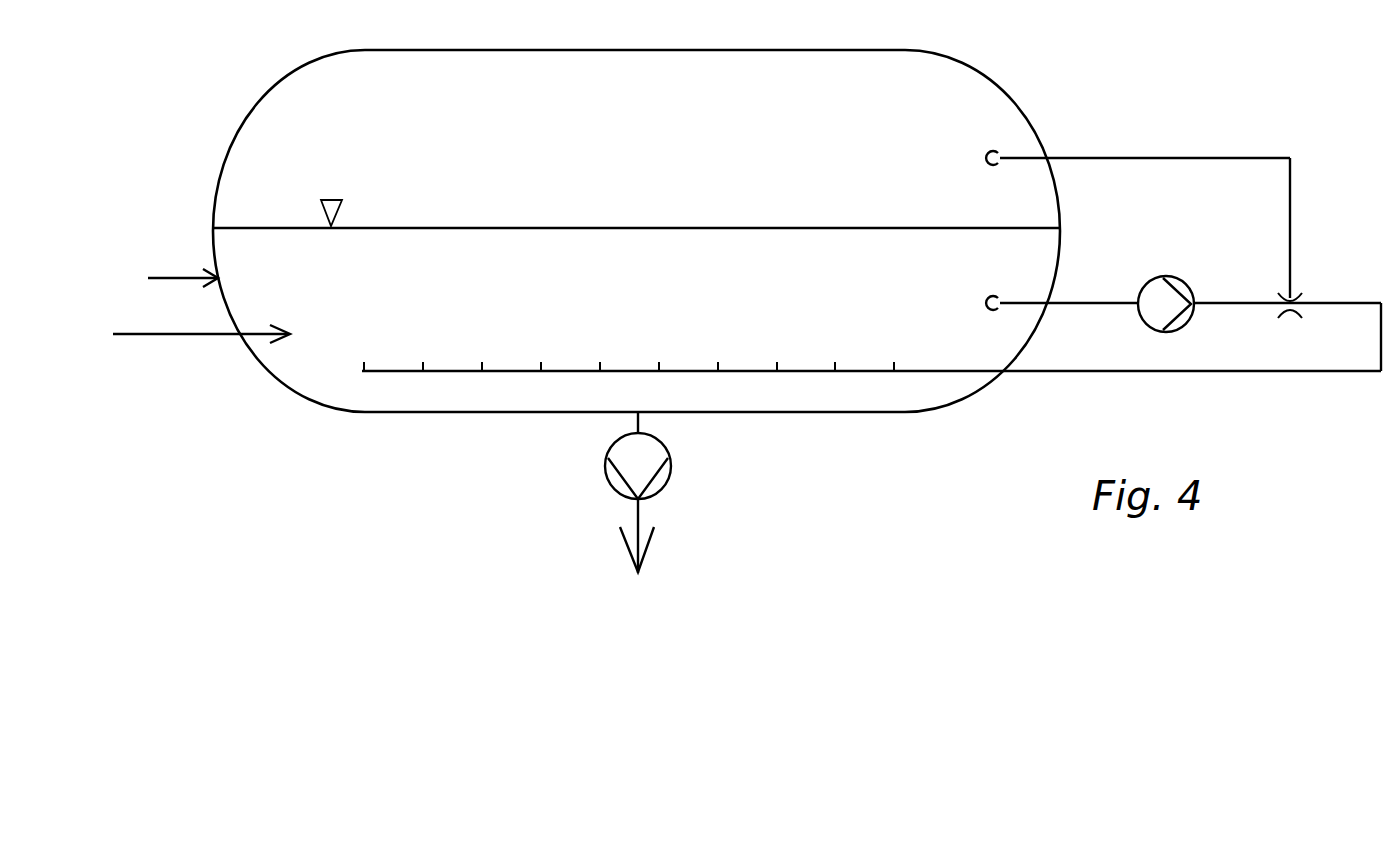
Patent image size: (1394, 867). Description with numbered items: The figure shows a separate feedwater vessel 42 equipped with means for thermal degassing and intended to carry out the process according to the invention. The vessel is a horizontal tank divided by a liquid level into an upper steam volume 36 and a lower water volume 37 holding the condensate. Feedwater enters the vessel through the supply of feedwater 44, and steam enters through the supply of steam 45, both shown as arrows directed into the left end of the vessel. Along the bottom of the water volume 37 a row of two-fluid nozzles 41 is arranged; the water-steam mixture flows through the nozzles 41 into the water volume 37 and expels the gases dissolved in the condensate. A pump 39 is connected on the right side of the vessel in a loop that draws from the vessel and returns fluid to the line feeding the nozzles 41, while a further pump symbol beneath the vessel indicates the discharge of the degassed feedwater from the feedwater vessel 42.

The steam volume 36 is at (636, 178).
The water volume 37 is at (871, 326).
The pump 39 is at (1165, 278).
The two-fluid nozzle 41 is at (720, 358).
The feedwater vessel 42 is at (399, 496).
The supply of feedwater into feedwater vessel 44 is at (180, 275).
The supply of steam into feedwater vessel 45 is at (202, 337).